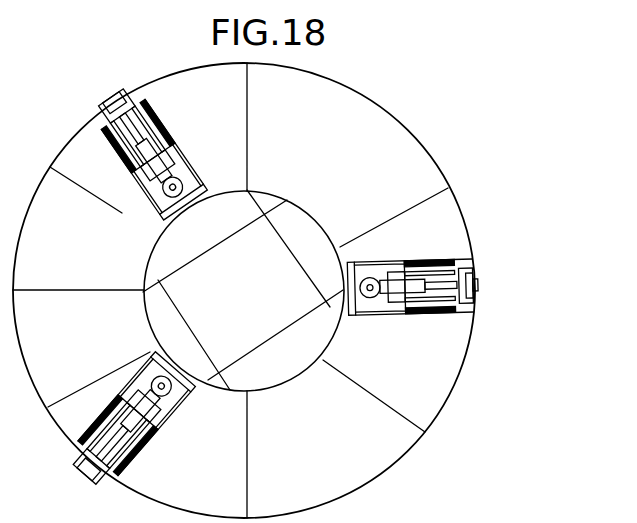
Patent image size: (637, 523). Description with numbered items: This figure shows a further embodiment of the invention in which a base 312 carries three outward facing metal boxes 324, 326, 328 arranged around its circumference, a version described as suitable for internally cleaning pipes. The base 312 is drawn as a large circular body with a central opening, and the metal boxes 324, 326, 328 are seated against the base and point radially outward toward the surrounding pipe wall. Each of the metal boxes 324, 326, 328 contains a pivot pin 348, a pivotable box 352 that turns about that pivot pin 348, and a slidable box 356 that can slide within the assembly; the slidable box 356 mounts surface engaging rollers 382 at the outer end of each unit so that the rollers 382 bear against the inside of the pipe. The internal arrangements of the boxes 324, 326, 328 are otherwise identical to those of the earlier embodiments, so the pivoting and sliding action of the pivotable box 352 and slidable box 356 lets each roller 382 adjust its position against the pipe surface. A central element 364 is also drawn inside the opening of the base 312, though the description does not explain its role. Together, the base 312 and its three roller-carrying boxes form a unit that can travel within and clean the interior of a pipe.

The base 312 is at (405, 125).
The metal box 324 is at (198, 176).
The metal box 326 is at (178, 404).
The metal box 328 is at (392, 315).
The pivot pin 348 is at (148, 178).
The pivotable box 352 is at (162, 137).
The slidable box 356 is at (160, 122).
The workpiece 364 is at (168, 367).
The surface engaging roller 382 is at (107, 106).